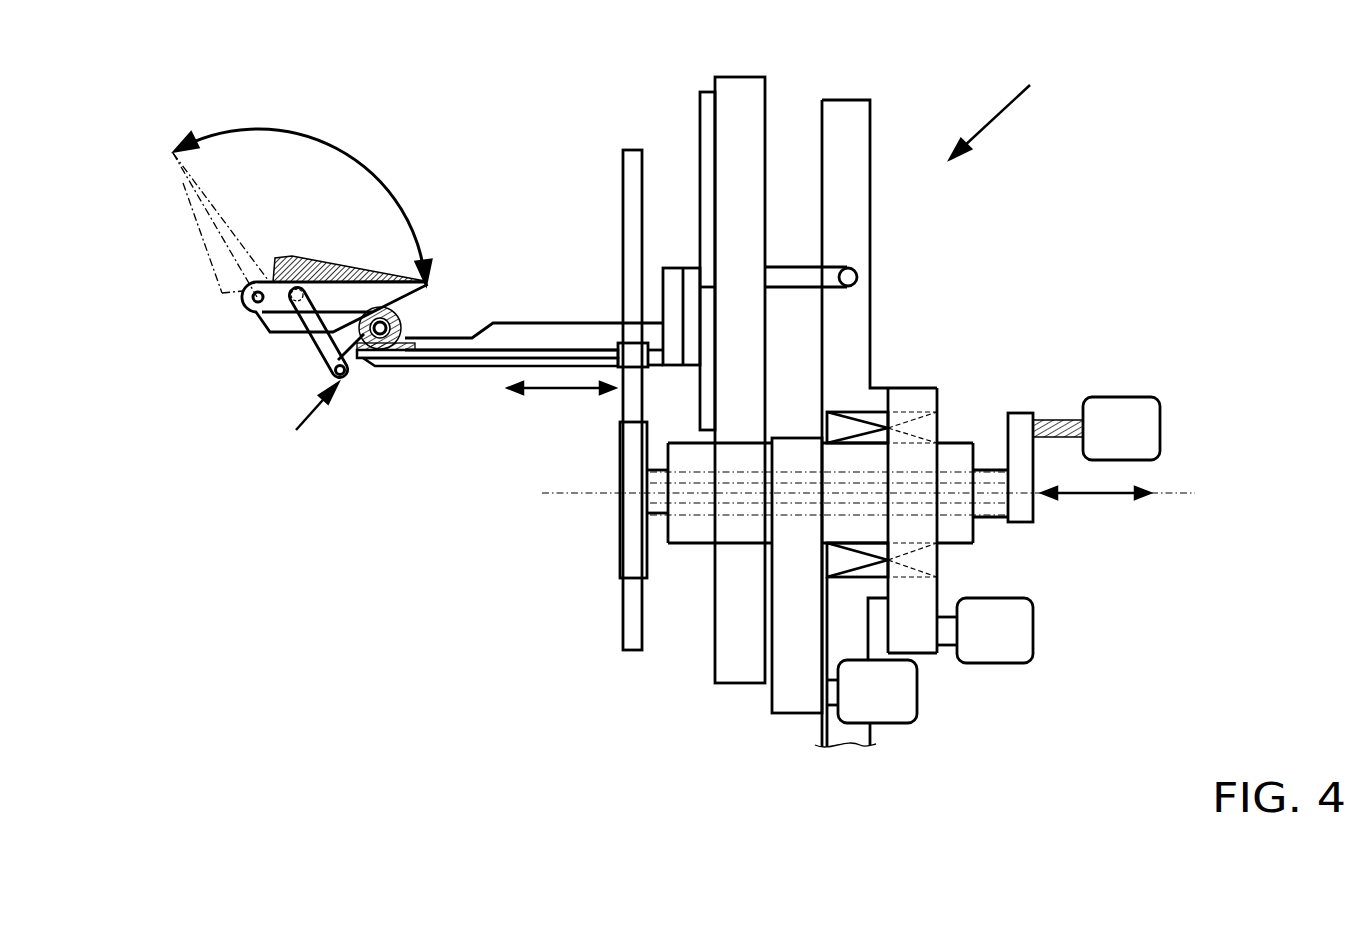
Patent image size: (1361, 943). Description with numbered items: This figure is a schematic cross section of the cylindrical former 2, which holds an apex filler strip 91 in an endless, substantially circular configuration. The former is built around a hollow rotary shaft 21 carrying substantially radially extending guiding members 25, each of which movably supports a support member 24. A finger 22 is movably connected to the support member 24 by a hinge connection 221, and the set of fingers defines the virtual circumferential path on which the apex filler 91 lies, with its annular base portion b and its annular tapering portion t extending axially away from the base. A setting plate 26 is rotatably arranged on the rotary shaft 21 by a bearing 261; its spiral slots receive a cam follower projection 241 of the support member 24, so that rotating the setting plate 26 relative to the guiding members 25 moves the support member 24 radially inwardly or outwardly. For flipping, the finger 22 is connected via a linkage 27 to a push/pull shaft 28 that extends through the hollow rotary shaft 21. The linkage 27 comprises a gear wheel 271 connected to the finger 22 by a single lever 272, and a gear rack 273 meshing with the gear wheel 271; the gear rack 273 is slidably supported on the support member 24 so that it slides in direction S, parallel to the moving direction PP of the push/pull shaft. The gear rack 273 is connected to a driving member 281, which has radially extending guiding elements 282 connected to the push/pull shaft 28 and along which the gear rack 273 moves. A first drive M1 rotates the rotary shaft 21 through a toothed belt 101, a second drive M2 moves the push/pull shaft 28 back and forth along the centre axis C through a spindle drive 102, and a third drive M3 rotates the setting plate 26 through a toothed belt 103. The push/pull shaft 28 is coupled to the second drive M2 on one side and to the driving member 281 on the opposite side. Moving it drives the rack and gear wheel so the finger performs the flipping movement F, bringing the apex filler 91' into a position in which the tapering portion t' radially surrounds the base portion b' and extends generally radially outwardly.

The cylindrical former 2 is at (994, 112).
The hollow rotary shaft 21 is at (685, 534).
The finger 22 is at (372, 302).
The hinge connection 221 is at (243, 300).
The support member 24 is at (523, 325).
The cam follower projection 241 is at (790, 276).
The guiding member 25 is at (723, 153).
The setting plate 26 is at (857, 217).
The bearing 261 is at (879, 393).
The linkage 27 is at (312, 422).
The gear wheel 271 is at (427, 285).
The single lever 272 is at (320, 342).
The gear rack 273 is at (415, 356).
The push/pull shaft 28 is at (643, 523).
The driving member 281 is at (628, 440).
The guiding element 282 is at (633, 205).
The apex filler strip 91 is at (349, 236).
The toothed belt 101 is at (844, 618).
The spindle drive 102 is at (1084, 427).
The toothed belt 103 is at (950, 667).
The first drive M1 is at (877, 691).
The second drive M2 is at (1121, 428).
The third drive M3 is at (995, 630).
The flipping F is at (303, 206).
The direction s S is at (561, 405).
The direction pp PP is at (1096, 508).
The centre axis C is at (1201, 518).
The annular tapering portion t is at (395, 259).
The tapering portion t' is at (158, 190).
The annular base portion b is at (264, 224).
The base portion b' is at (205, 298).
The apex filler 91' is at (171, 247).